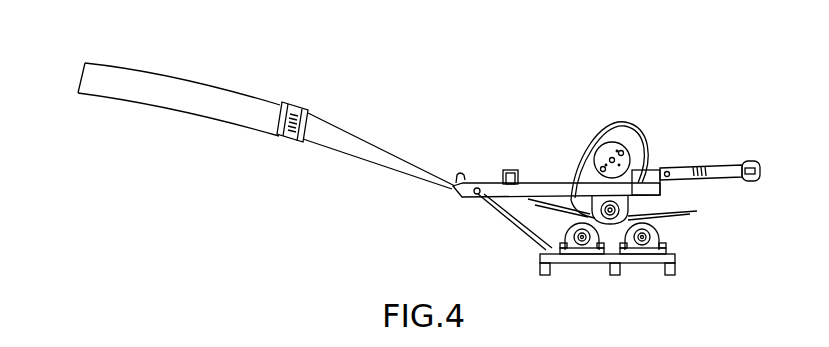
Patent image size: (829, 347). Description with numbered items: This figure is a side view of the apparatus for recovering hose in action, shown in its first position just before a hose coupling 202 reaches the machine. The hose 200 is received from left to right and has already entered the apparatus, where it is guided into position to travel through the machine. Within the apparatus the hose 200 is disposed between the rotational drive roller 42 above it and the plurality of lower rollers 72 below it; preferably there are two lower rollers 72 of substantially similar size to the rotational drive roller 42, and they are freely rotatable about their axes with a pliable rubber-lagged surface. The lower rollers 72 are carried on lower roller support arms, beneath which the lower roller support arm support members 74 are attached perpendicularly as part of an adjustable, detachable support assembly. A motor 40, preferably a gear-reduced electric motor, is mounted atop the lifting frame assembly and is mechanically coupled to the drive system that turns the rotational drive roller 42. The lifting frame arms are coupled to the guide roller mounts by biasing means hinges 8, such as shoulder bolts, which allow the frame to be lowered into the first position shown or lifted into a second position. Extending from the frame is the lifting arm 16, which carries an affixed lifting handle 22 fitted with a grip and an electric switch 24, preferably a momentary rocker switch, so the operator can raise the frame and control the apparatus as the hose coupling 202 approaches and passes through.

The hose 200 is at (179, 85).
The hose coupling 202 is at (366, 123).
The biasing means hinges 8 is at (556, 202).
The lifting arm 16 is at (701, 142).
The lifting handle 22 is at (741, 136).
The electric switch 24 is at (746, 204).
The motor 40 is at (614, 130).
The rotational drive roller 42 is at (596, 170).
The lower rollers 72 is at (596, 233).
The lower roller support arm support members 74 is at (608, 291).